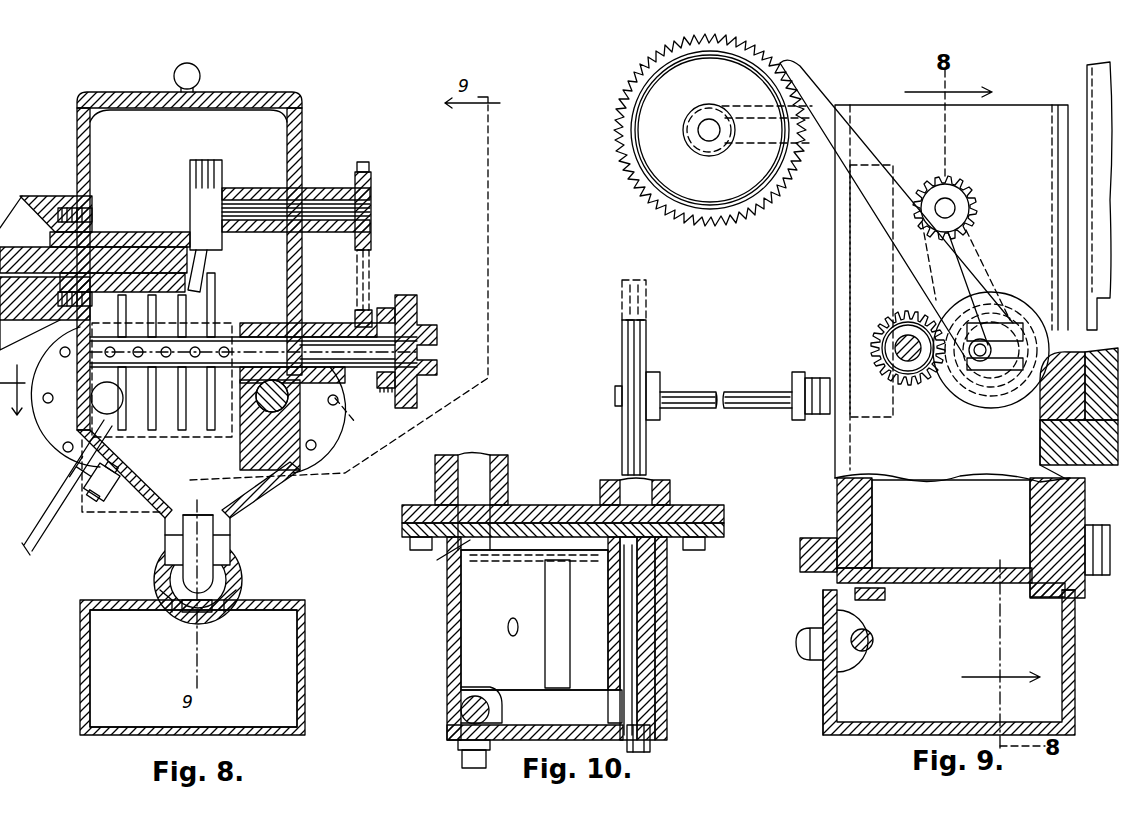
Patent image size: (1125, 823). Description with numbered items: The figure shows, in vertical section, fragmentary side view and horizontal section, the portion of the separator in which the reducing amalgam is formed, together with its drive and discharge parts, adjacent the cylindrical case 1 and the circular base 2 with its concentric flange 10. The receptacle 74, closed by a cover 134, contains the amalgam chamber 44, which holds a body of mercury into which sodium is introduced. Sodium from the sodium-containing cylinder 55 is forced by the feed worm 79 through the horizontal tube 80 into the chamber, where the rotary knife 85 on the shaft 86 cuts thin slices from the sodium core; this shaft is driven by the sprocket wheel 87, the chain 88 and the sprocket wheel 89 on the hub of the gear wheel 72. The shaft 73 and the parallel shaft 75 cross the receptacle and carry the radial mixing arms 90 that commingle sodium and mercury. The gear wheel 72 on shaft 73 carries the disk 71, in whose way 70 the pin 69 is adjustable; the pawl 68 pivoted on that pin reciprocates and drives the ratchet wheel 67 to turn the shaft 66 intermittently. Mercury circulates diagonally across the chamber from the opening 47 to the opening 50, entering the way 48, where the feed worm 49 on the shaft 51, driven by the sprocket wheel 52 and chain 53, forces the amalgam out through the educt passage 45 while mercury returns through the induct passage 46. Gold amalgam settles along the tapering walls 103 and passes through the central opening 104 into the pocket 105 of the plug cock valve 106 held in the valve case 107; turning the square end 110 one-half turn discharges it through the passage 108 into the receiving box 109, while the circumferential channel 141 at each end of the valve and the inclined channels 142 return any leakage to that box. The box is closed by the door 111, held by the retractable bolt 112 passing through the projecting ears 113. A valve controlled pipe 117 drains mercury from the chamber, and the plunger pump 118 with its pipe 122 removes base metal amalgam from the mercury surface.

In FIG. 9, the cylindrical case 1 is at (1092, 87).
In FIG. 10, the circular base 2 is at (697, 510).
In FIG. 8, the concentric flange 10 is at (354, 421).
In FIG. 8, the amalgam chamber 44 is at (162, 305).
In FIG. 10, the amalgam chamber 44 is at (534, 620).
In FIG. 9, the amalgam chamber 44 is at (952, 464).
In FIG. 10, the educt passage depression 45 is at (618, 493).
In FIG. 9, the educt passage depression 45 is at (1079, 384).
In FIG. 10, the induct passage depression 46 is at (476, 470).
In FIG. 8, the opening 47 is at (100, 406).
In FIG. 10, the opening 47 is at (438, 559).
In FIG. 10, the way 48 is at (640, 608).
In FIG. 9, the way 48 is at (1080, 468).
In FIG. 8, the feed worm 49 is at (300, 410).
In FIG. 10, the feed worm 49 is at (645, 640).
In FIG. 9, the feed worm 49 is at (1046, 450).
In FIG. 8, the opening 50 is at (244, 398).
In FIG. 10, the opening 50 is at (608, 712).
In FIG. 10, the shaft 51 is at (652, 746).
In FIG. 9, the shaft 51 is at (745, 393).
In FIG. 9, the sprocket wheel 52 is at (642, 366).
In FIG. 9, the chain 53 is at (646, 302).
In FIG. 8, the sodium-containing cylinder 55 is at (61, 273).
In FIG. 9, the shaft 66 is at (710, 141).
In FIG. 9, the ratchet wheel 67 is at (628, 160).
In FIG. 9, the pawl 68 is at (818, 96).
In FIG. 9, the pin 69 is at (972, 360).
In FIG. 8, the way 70 is at (425, 356).
In FIG. 9, the way 70 is at (996, 370).
In FIG. 8, the disk 71 is at (405, 296).
In FIG. 9, the disk 71 is at (1026, 308).
In FIG. 8, the gear wheel 72 is at (386, 306).
In FIG. 8, the shaft 73 is at (262, 335).
In FIG. 8, the receptacle 74 is at (302, 255).
In FIG. 10, the receptacle 74 is at (447, 645).
In FIG. 9, the receptacle 74 is at (848, 445).
In FIG. 9, the shaft 75 is at (898, 338).
In FIG. 8, the feed worm 79 is at (40, 278).
In FIG. 8, the horizontal tube 80 is at (142, 240).
In FIG. 8, the rotary knife 85 is at (200, 258).
In FIG. 8, the shaft 86 is at (262, 202).
In FIG. 9, the shaft 86 is at (956, 207).
In FIG. 8, the sprocket wheel 87 is at (366, 170).
In FIG. 9, the sprocket wheel 87 is at (950, 186).
In FIG. 8, the chain 88 is at (372, 264).
In FIG. 9, the chain 88 is at (985, 255).
In FIG. 8, the sprocket wheel 89 is at (355, 320).
In FIG. 8, the radial mixing arms 90 is at (215, 318).
In FIG. 8, the tapering walls 103 is at (120, 470).
In FIG. 10, the tapering walls 103 is at (512, 615).
In FIG. 8, the central opening 104 is at (185, 520).
In FIG. 10, the central opening 104 is at (548, 656).
In FIG. 8, the pocket 105 is at (215, 540).
In FIG. 9, the pocket 105 is at (954, 528).
In FIG. 8, the plug cock valve 106 is at (236, 568).
In FIG. 9, the plug cock valve 106 is at (960, 580).
In FIG. 8, the valve case 107 is at (160, 592).
In FIG. 8, the passage 108 is at (186, 608).
In FIG. 8, the receiving box 109 is at (285, 662).
In FIG. 9, the receiving box 109 is at (830, 718).
In FIG. 9, the square end 110 is at (800, 555).
In FIG. 9, the door 111 is at (828, 605).
In FIG. 9, the retractable bolt 112 is at (874, 640).
In FIG. 9, the projecting ears 113 is at (865, 662).
In FIG. 8, the valve controlled pipe 117 is at (86, 551).
In FIG. 10, the plunger pump 118 is at (460, 710).
In FIG. 10, the pipe 122 is at (462, 758).
In FIG. 8, the cover 134 is at (235, 100).
In FIG. 9, the circumferential channel 141 is at (912, 518).
In FIG. 9, the inclined channels 142 is at (886, 594).